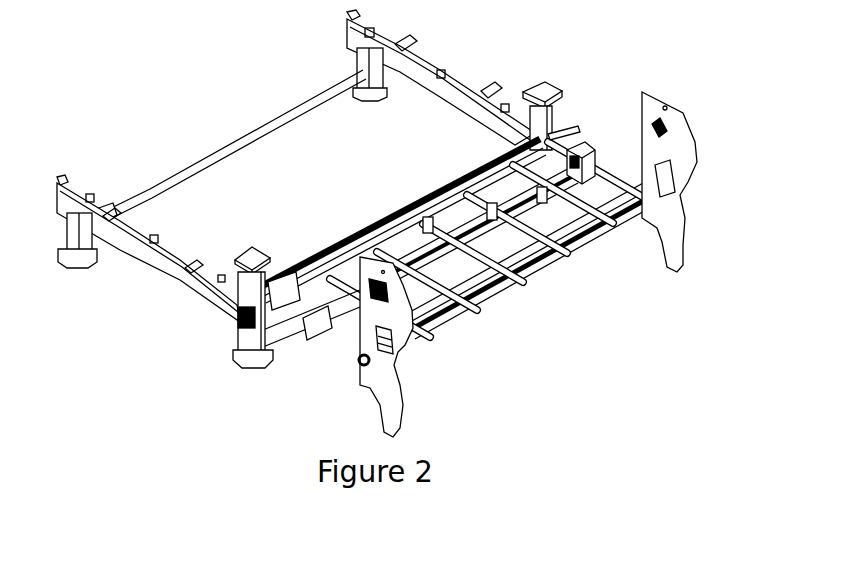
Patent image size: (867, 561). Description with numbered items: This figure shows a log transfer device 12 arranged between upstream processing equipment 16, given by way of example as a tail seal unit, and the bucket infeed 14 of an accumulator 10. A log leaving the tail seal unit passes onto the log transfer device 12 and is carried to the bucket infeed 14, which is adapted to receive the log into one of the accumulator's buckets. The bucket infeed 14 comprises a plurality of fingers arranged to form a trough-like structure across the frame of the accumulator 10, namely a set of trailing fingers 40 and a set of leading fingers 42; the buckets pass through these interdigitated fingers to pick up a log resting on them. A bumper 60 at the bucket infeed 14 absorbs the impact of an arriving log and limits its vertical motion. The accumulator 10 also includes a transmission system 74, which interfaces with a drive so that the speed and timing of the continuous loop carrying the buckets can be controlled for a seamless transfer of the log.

The accumulator 10 is at (125, 276).
The log transfer device 12 is at (339, 341).
The bucket infeed 14 is at (590, 137).
The upstream processing equipment 16 is at (697, 163).
The trailing fingers 40 is at (308, 343).
The leading fingers 42 is at (298, 283).
The bumper 60 is at (473, 188).
The transmission system 74 is at (238, 330).